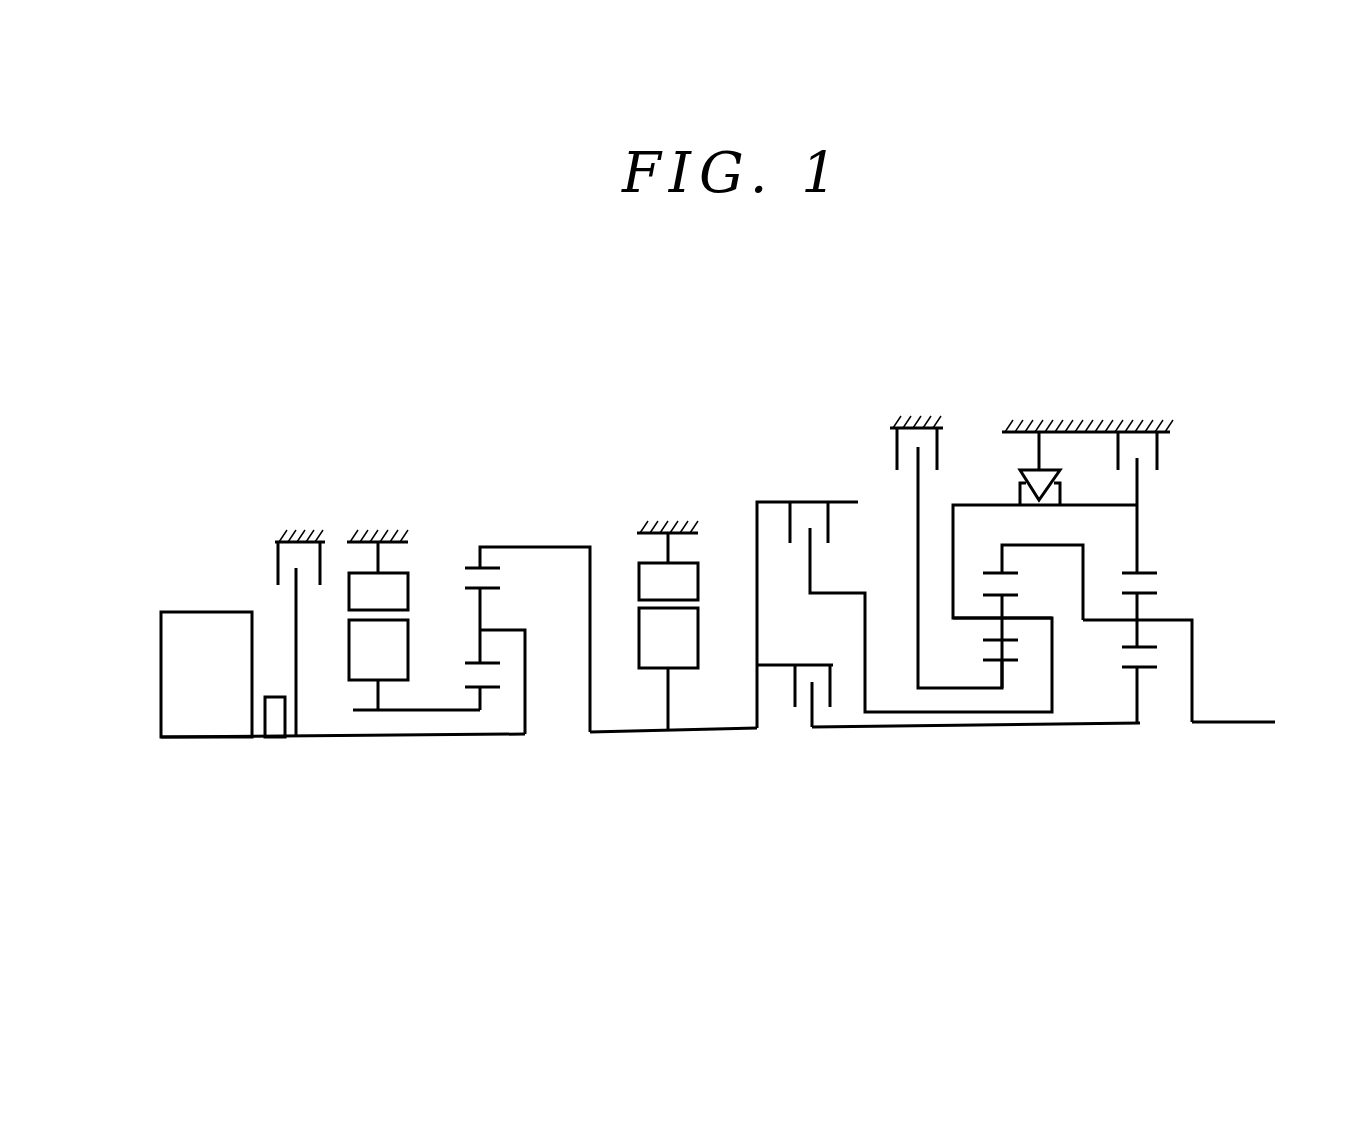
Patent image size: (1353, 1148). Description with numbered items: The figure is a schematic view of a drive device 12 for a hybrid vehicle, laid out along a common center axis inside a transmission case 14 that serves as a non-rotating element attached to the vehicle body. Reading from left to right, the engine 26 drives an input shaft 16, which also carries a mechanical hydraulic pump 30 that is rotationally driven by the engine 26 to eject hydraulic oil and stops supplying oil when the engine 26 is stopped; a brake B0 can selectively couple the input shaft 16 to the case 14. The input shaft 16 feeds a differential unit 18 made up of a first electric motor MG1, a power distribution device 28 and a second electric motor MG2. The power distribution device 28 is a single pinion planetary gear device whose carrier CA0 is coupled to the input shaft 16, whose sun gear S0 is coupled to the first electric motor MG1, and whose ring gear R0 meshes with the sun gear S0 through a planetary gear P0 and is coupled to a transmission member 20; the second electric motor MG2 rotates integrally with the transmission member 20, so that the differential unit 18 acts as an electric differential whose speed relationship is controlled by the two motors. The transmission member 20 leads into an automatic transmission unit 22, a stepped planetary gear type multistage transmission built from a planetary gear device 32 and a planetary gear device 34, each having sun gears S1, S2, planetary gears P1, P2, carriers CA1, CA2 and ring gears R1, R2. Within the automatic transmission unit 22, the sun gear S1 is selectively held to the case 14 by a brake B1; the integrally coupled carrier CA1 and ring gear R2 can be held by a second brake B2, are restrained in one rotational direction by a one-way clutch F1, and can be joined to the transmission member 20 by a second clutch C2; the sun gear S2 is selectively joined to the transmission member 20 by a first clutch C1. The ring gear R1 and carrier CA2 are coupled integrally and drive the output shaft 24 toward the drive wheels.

The drive device for a hybrid vehicle 12 is at (260, 291).
The transmission case 14 is at (668, 520).
The input shaft 16 is at (391, 738).
The differential unit 18 is at (585, 352).
The transmission member 20 is at (703, 731).
The automatic transmission unit 22 is at (1105, 331).
The output shaft 24 is at (1222, 722).
The engine 26 is at (190, 623).
The power distribution device 28 is at (524, 784).
The mechanical hydraulic pump 30 is at (276, 723).
The planetary gear device 32 is at (991, 754).
The planetary gear device 34 is at (1158, 757).
The brake B0 is at (276, 560).
The first electric motor MG1 is at (400, 635).
The second electric motor MG2 is at (686, 628).
The ring gear R0 is at (468, 570).
The planetary gear P0 is at (488, 590).
The carrier CA0 is at (507, 623).
The sun gear S0 is at (472, 688).
The first clutch C1 is at (795, 684).
The second clutch C2 is at (947, 602).
The brake B1 is at (933, 552).
The second brake B2 is at (1157, 502).
The one-way clutch F1 is at (1087, 462).
The ring gear R1 is at (991, 568).
The planetary gear P1 is at (1011, 597).
The carrier CA1 is at (995, 619).
The sun gear S1 is at (998, 663).
The ring gear R2 is at (1147, 571).
The planetary gear P2 is at (1130, 645).
The carrier CA2 is at (1170, 619).
The sun gear S2 is at (1145, 667).